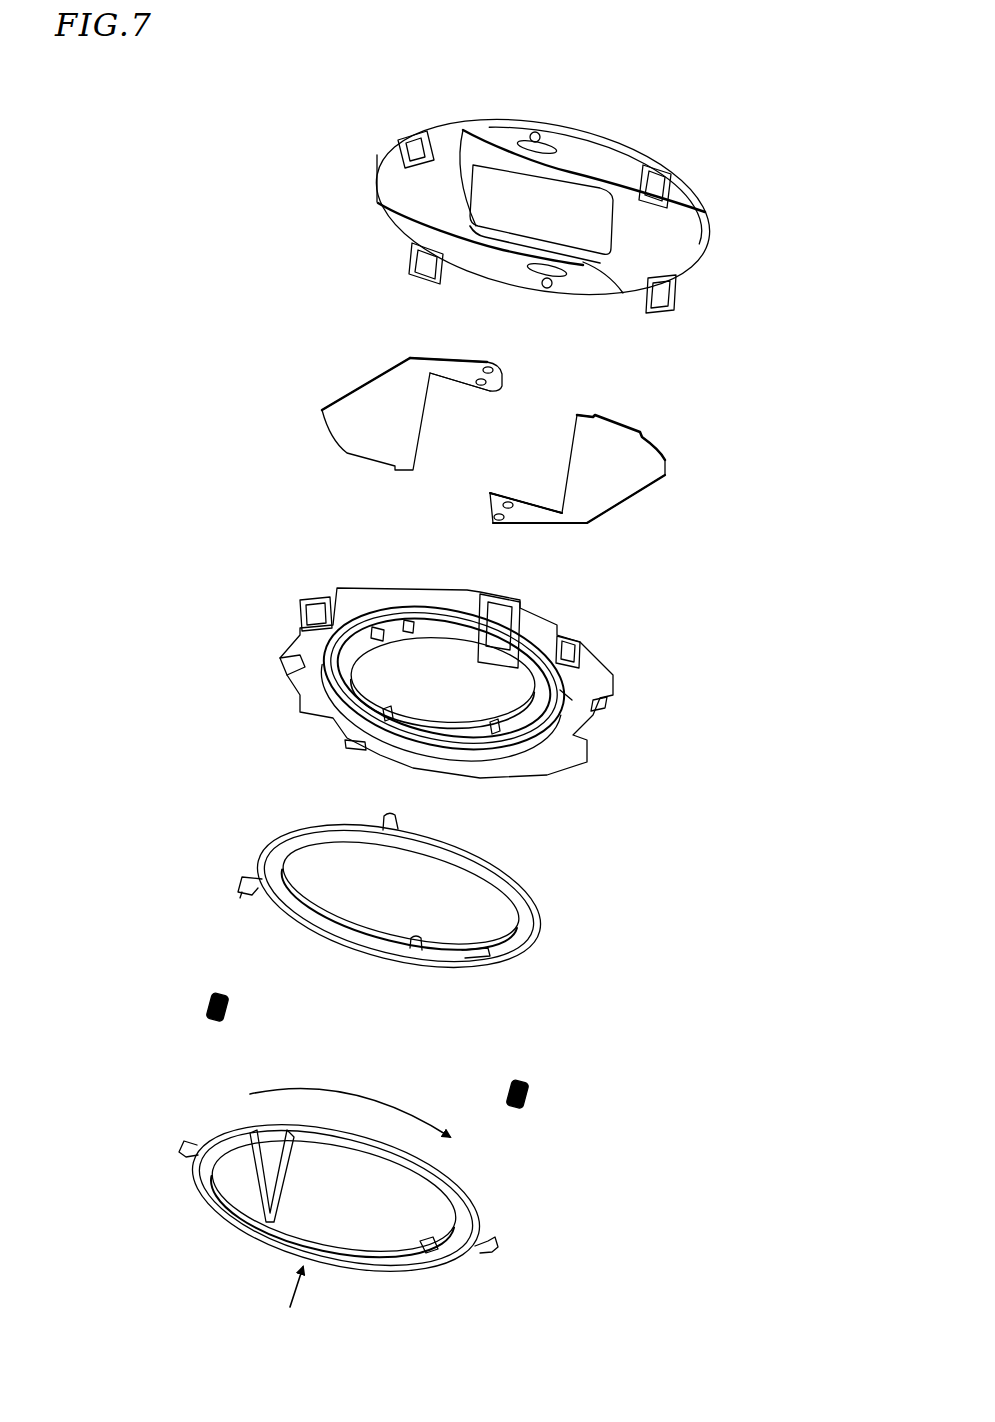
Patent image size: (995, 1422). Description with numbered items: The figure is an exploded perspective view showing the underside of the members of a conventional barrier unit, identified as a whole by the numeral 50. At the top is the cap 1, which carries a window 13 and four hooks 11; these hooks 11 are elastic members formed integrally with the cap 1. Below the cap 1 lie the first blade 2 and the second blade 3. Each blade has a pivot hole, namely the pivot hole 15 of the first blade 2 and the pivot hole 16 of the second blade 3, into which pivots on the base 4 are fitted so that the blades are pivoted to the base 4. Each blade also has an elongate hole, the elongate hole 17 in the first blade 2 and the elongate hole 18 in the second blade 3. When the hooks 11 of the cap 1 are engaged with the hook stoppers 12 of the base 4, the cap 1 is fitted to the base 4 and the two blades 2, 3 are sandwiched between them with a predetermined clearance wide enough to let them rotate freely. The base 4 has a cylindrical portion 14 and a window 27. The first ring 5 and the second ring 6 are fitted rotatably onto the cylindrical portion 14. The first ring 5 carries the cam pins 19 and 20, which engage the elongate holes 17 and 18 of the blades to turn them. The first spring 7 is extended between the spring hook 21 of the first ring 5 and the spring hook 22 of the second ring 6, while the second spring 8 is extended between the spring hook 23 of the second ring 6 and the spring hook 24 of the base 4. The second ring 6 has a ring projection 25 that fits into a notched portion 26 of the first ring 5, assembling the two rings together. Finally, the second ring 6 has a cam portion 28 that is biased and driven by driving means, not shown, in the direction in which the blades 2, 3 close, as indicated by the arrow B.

The cap 1 is at (700, 240).
The first blade 2 is at (337, 427).
The second blade 3 is at (657, 465).
The base 4 is at (603, 670).
The first ring 5 is at (530, 927).
The second ring 6 is at (473, 1203).
The first spring 7 is at (233, 1007).
The second spring 8 is at (512, 1083).
The hooks 11 is at (407, 143).
The hook stoppers 12 is at (320, 597).
The window 13 is at (565, 190).
The cylindrical portion 14 is at (347, 638).
The pivot hole 15 is at (493, 362).
The pivot hole 16 is at (490, 510).
The elongate hole 17 is at (502, 380).
The elongate hole 18 is at (502, 497).
The cam pin 19 is at (387, 817).
The cam pin 20 is at (450, 957).
The spring hook 21 is at (243, 880).
The spring hook 22 is at (182, 1145).
The spring hook 23 is at (497, 1242).
The spring hook 24 is at (600, 703).
The ring projection 25 is at (437, 1250).
The notched portion 26 is at (487, 957).
The window 27 is at (497, 693).
The cam portion 28 is at (260, 1155).
The assembly 50 is at (186, 336).